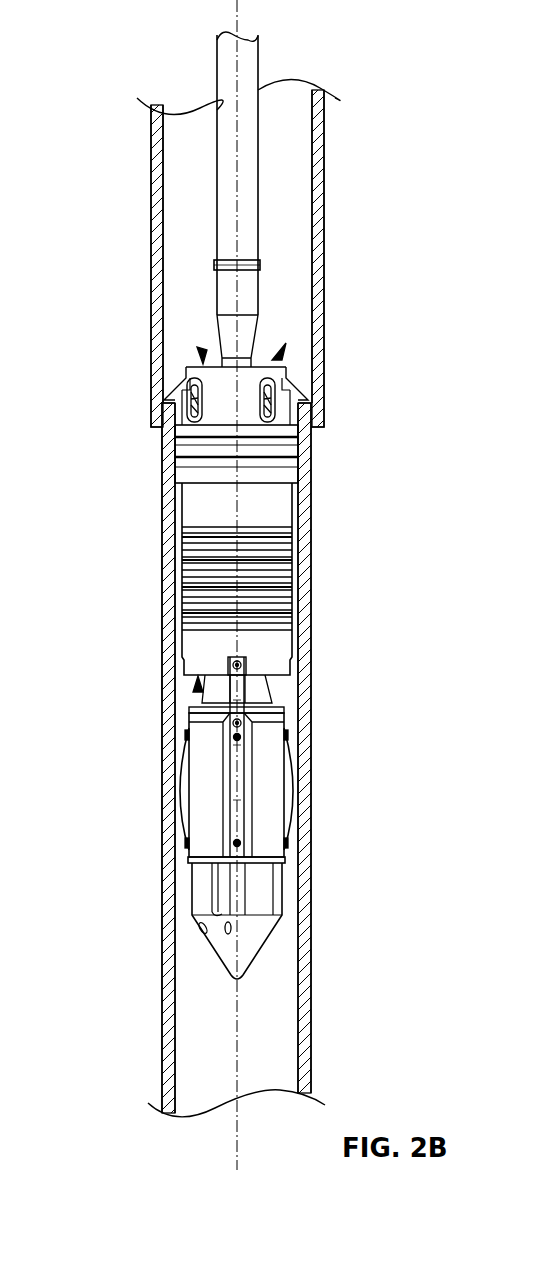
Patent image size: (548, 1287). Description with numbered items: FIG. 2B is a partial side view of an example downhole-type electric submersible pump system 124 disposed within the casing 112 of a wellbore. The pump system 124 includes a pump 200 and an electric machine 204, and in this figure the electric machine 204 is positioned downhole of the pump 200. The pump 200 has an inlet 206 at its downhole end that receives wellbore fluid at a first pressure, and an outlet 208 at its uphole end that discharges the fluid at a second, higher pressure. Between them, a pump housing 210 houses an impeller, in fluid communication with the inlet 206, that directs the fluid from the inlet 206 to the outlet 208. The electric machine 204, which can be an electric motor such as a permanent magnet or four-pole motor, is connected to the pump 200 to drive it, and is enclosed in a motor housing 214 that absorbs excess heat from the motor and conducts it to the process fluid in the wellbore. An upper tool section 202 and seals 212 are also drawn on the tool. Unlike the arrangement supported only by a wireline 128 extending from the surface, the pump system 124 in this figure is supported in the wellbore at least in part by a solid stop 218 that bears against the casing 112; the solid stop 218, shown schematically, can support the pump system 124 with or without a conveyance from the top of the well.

The casing 112 is at (305, 592).
The pump system 124 is at (280, 350).
The wireline 128 is at (246, 193).
The pump 200 is at (195, 508).
The upper tool section 202 is at (292, 440).
The electric machine 204 is at (277, 750).
The inlet 206 is at (195, 697).
The outlet 208 is at (200, 350).
The pump housing 210 is at (293, 513).
The seals 212 is at (168, 408).
The motor housing 214 is at (285, 853).
The solid stop 218 is at (173, 385).